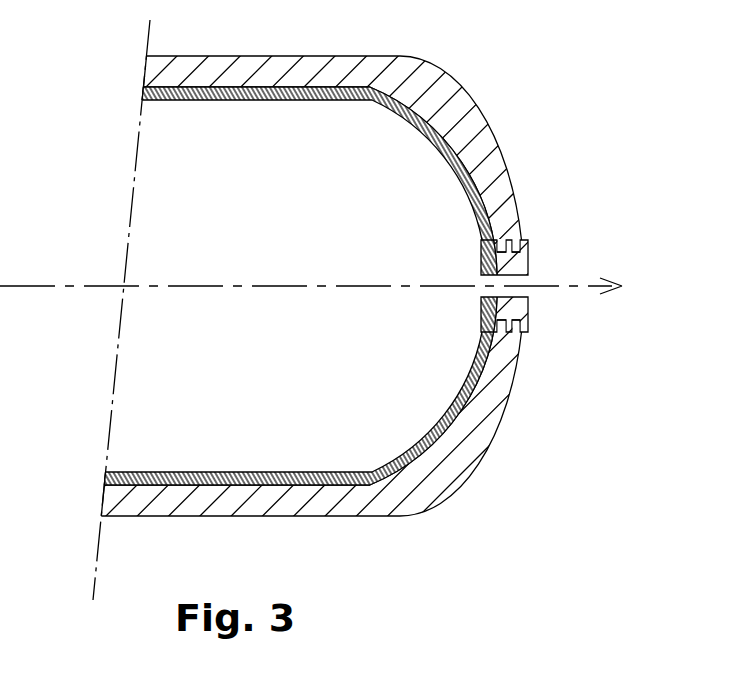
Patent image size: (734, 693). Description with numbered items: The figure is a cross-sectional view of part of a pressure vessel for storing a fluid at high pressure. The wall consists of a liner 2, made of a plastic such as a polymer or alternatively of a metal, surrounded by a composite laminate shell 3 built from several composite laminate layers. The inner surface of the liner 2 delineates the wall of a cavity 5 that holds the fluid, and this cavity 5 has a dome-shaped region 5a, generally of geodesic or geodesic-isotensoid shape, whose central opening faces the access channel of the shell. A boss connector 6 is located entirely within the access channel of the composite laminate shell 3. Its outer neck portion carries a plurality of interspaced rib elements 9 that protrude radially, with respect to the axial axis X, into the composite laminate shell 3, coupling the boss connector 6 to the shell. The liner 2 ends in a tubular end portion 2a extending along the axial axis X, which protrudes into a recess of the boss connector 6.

The liner 2 is at (146, 92).
The tubular end portion 2a is at (490, 283).
The composite laminate shell 3 is at (173, 76).
The cavity 5 is at (160, 205).
The dome-shaped region 5a is at (390, 380).
The boss connector 6 is at (531, 266).
The interspaced rib elements 9 is at (519, 252).
The axial axis X is at (323, 288).